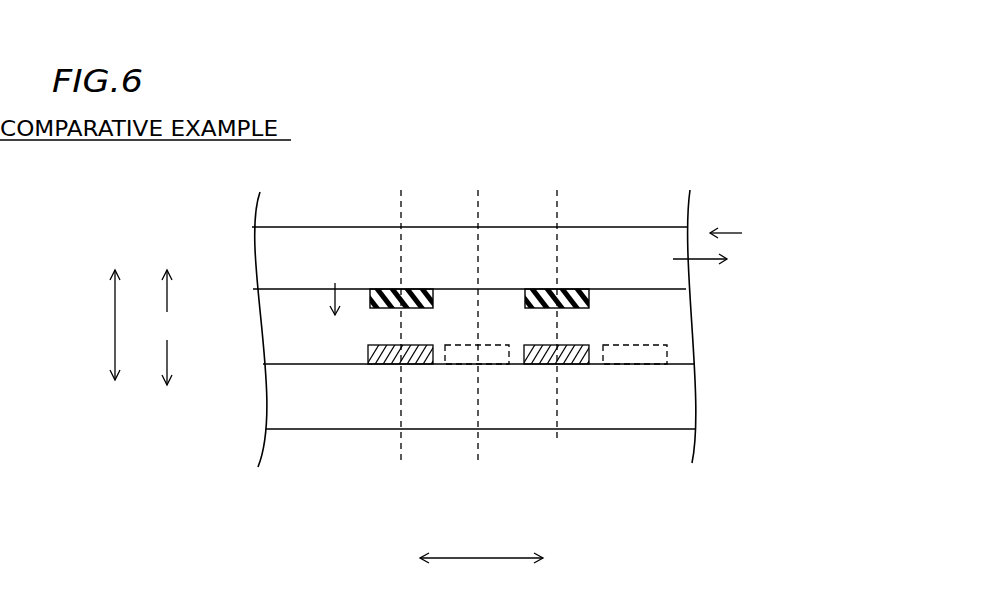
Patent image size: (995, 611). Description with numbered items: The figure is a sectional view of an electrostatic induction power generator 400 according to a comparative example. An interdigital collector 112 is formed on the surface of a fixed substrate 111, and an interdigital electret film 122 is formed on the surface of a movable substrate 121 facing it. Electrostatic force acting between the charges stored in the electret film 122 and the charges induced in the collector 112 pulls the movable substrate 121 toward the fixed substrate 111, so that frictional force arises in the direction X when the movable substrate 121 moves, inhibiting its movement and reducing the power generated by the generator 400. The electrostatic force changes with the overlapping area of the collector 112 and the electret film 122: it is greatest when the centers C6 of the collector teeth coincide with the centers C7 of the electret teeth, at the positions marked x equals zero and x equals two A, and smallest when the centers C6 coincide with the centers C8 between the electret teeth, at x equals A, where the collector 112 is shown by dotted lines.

The electrostatic induction power generator 400 is at (448, 284).
The movable substrate 121 is at (656, 256).
The interdigital electret film 122 is at (590, 301).
The fixed substrate 111 is at (650, 416).
The interdigital collector 112 is at (575, 364).
The centers of teeth of the collector C6 is at (557, 364).
The centers of teeth of the electret film C7 is at (557, 289).
The centers between teeth of the electret film C8 is at (478, 289).